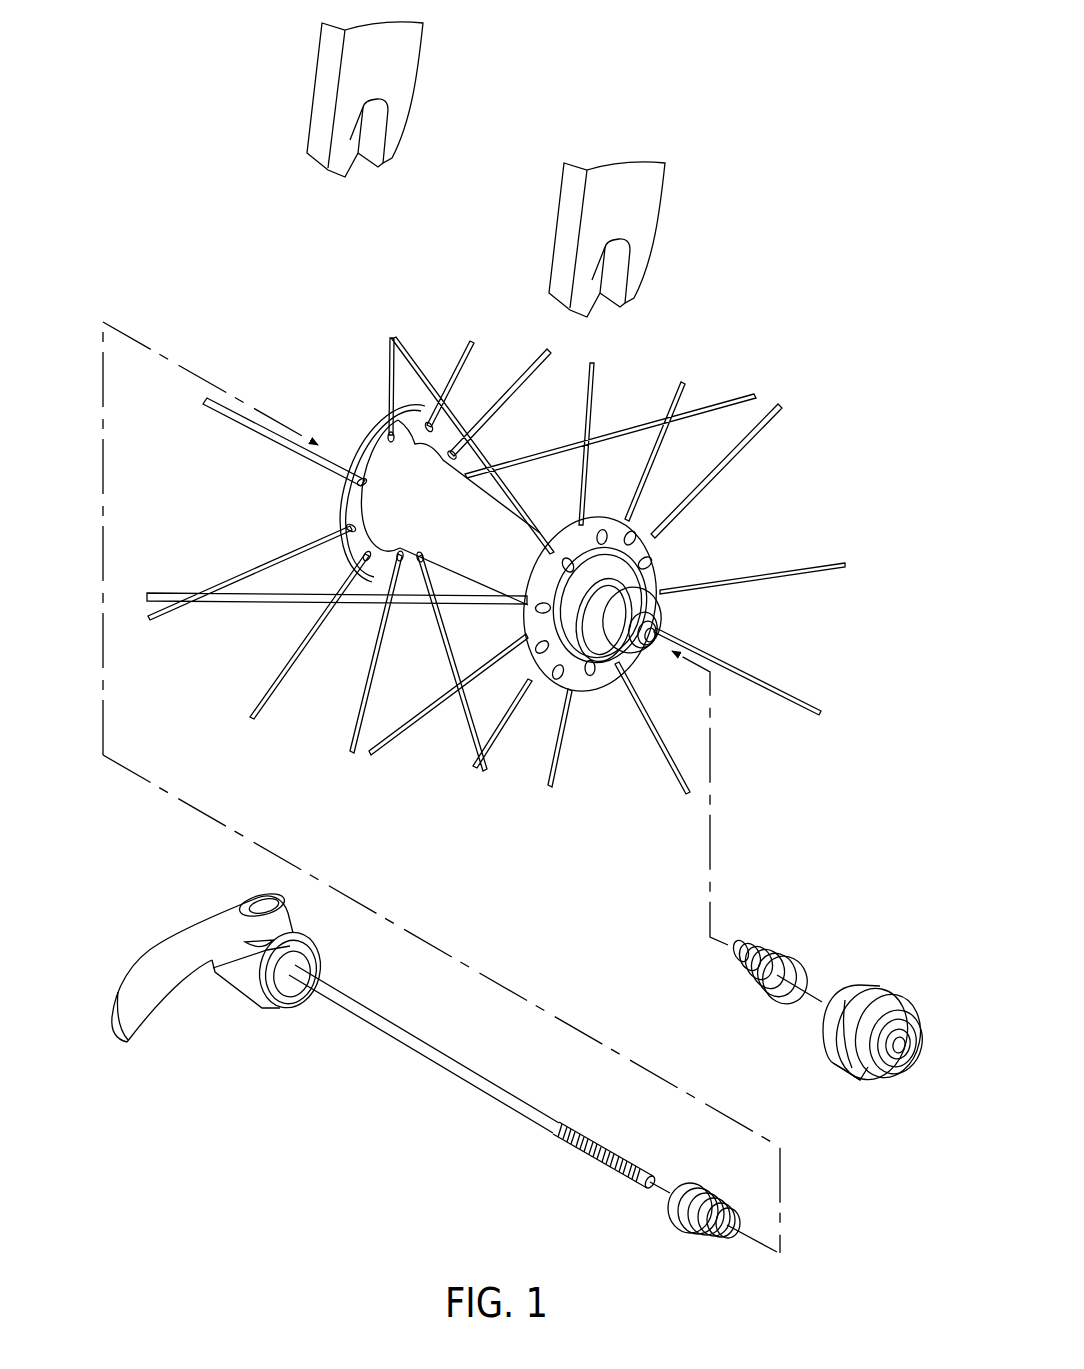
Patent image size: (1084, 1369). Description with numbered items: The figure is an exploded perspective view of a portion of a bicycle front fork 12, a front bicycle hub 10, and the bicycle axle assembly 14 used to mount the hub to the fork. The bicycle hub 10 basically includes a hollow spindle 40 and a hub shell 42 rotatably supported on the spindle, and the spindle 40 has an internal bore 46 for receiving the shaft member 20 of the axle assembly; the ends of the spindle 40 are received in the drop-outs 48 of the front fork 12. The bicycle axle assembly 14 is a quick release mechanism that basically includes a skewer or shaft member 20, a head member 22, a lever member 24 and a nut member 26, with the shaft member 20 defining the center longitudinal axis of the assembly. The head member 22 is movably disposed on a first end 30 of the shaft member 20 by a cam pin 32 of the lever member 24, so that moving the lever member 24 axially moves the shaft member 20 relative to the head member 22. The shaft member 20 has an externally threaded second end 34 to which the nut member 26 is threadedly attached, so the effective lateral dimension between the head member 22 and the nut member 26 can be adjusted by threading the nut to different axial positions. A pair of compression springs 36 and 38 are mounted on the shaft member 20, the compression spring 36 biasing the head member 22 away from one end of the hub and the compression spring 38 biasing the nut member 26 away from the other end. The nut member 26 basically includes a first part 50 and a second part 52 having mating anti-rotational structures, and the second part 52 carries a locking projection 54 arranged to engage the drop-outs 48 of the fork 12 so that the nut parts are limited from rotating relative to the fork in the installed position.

The front bicycle hub 10 is at (496, 565).
The bicycle fork 12 is at (669, 205).
The bicycle axle assembly 14 is at (444, 1075).
The shaft member 20 is at (381, 1041).
The head member 22 is at (235, 989).
The lever member 24 is at (202, 951).
The nut member 26 is at (855, 1004).
The first end 30 is at (300, 994).
The cam pin 32 is at (267, 903).
The second end 34 is at (573, 1148).
The compression spring 36 is at (680, 1230).
The compression spring 38 is at (770, 990).
The spindle 40 is at (657, 607).
The hub shell 42 is at (493, 560).
The internal bore 46 is at (650, 636).
The drop-outs 48 is at (376, 165).
The first part 50 is at (842, 980).
The second part 52 is at (909, 991).
The locking projection 54 is at (847, 1077).